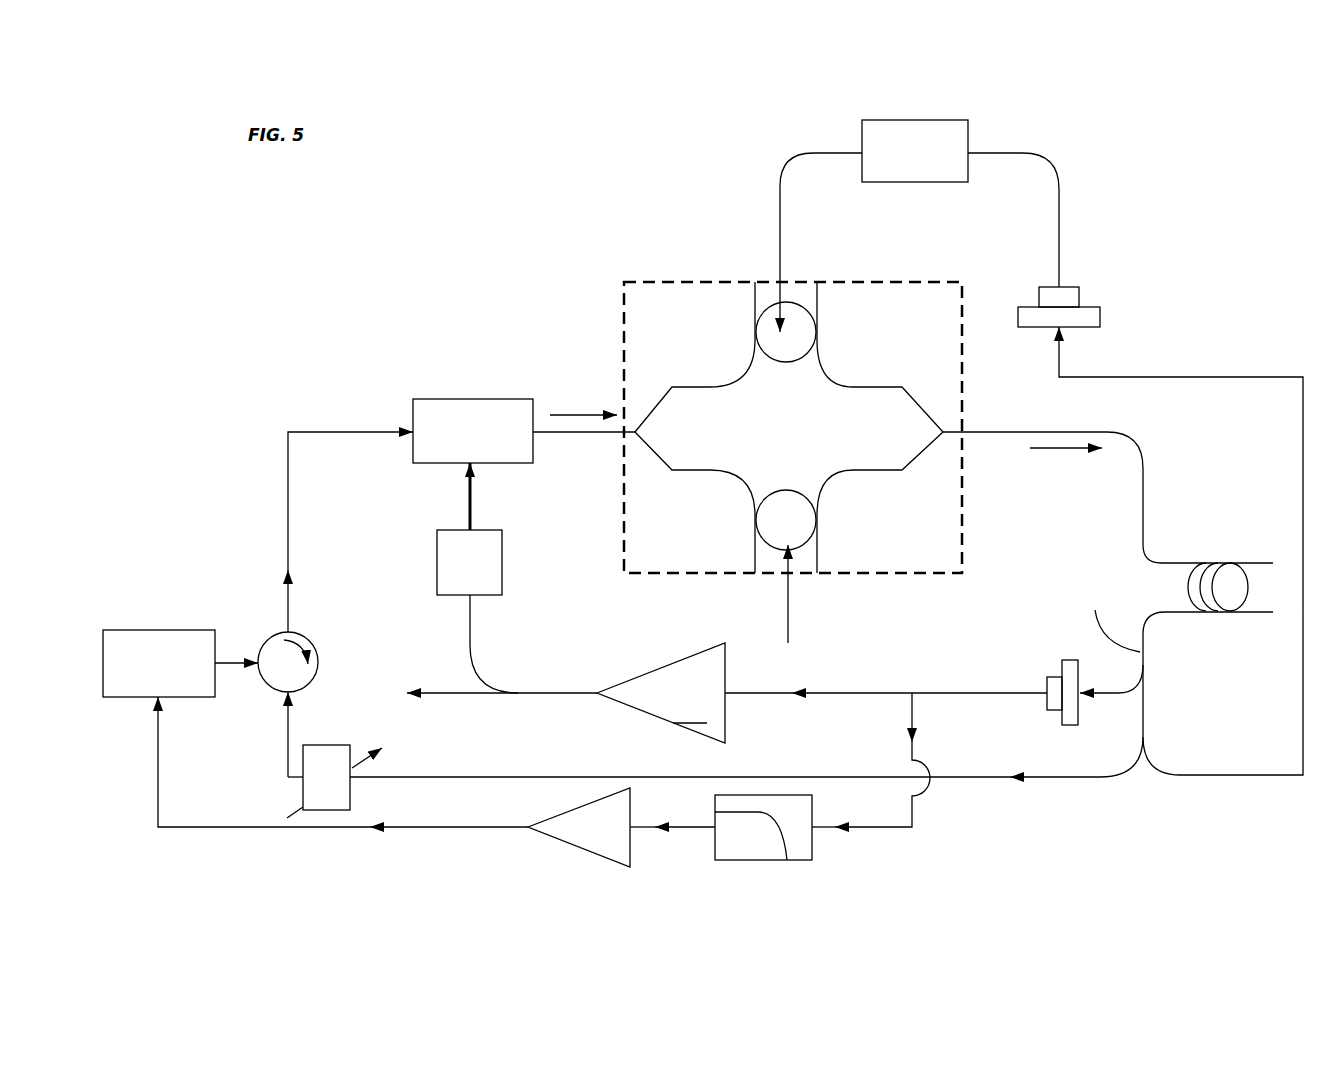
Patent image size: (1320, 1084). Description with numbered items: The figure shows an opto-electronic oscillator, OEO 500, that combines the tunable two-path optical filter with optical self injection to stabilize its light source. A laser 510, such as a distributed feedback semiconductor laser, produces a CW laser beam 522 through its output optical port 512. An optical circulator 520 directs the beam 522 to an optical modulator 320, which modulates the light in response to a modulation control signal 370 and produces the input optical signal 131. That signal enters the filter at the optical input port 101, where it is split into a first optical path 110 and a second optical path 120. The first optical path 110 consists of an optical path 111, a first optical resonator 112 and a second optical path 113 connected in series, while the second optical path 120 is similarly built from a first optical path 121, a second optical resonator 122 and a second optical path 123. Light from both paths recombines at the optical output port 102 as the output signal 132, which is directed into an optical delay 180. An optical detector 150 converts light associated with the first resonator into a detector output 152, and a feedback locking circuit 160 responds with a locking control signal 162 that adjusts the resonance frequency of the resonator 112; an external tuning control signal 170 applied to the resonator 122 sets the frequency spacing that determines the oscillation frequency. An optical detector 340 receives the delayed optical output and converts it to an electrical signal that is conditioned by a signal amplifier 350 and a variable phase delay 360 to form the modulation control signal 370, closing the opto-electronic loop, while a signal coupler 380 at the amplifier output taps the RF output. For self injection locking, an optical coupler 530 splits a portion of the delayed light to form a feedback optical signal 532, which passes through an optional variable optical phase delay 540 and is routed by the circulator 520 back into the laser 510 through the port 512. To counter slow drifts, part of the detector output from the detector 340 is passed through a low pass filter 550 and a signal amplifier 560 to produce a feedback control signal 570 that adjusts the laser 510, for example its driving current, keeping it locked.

The OEO 500 is at (528, 224).
The optical input port 101 is at (630, 442).
The optical output port 102 is at (948, 437).
The first optical path 110 is at (785, 357).
The optical path 111 is at (710, 385).
The first optical resonator 112 is at (785, 364).
The second optical path 113 is at (838, 375).
The second optical path 120 is at (785, 535).
The first optical path 121 is at (710, 472).
The second optical resonator 122 is at (770, 556).
The second optical path 123 is at (847, 473).
The input optical signal 131 is at (575, 410).
The output signal 132 is at (1143, 429).
The optical detector 150 is at (1078, 298).
The detector output 152 is at (1040, 158).
The feedback locking circuit 160 is at (917, 120).
The locking control signal 162 is at (780, 217).
The tuning control signal 170 is at (792, 588).
The optical delay 180 is at (1230, 593).
The optical modulator 320 is at (453, 399).
The optical detector 340 is at (1047, 710).
The signal amplifier 350 is at (661, 693).
The variable phase delay 360 is at (502, 570).
The modulation control signal 370 is at (470, 505).
The signal coupler 380 is at (510, 695).
The laser 510 is at (165, 630).
The output optical port 512 is at (233, 662).
The optical circulator 520 is at (318, 648).
The CW laser beam 522 is at (285, 597).
The optical coupler 530 is at (1145, 745).
The feedback optical signal 532 is at (1018, 783).
The variable optical phase delay 540 is at (303, 795).
The low pass filter 550 is at (815, 850).
The signal amplifier 560 is at (630, 843).
The feedback control signal 570 is at (302, 827).